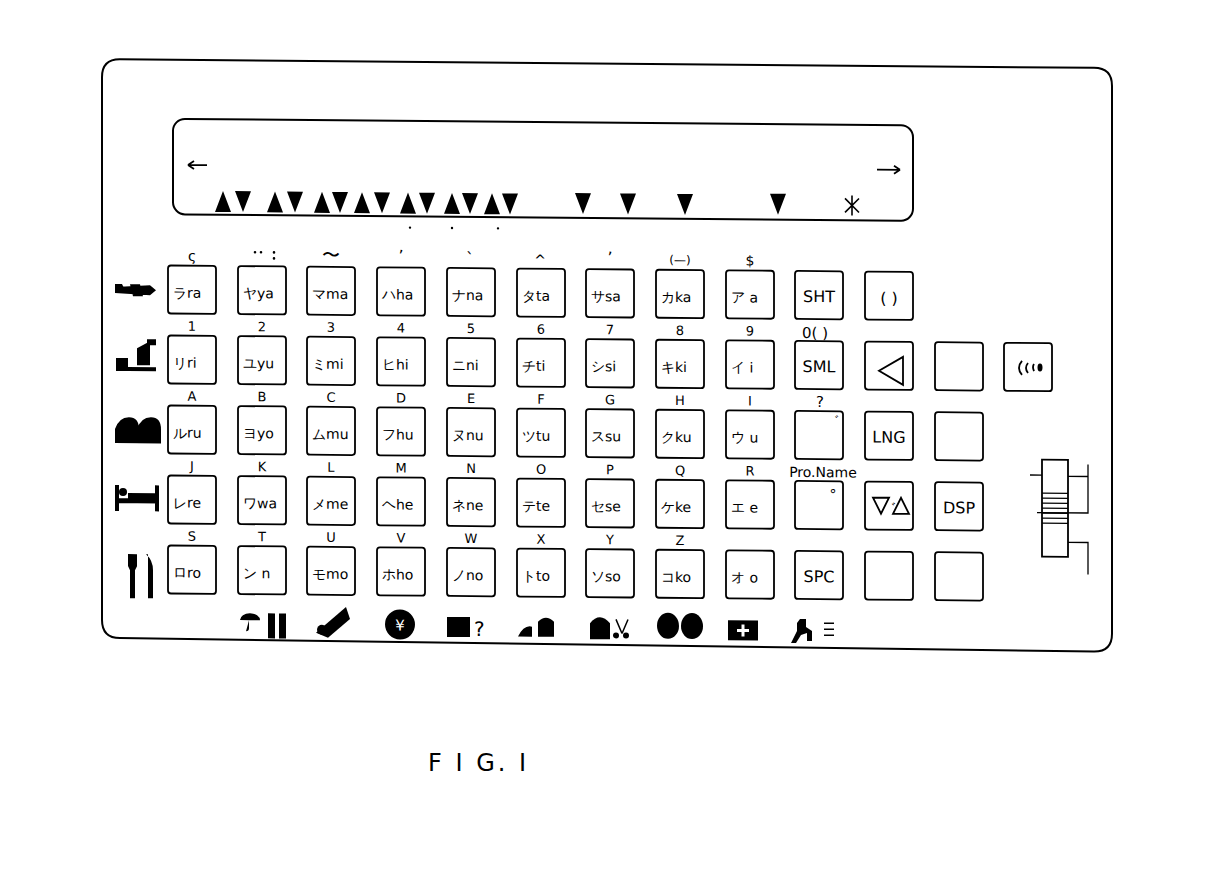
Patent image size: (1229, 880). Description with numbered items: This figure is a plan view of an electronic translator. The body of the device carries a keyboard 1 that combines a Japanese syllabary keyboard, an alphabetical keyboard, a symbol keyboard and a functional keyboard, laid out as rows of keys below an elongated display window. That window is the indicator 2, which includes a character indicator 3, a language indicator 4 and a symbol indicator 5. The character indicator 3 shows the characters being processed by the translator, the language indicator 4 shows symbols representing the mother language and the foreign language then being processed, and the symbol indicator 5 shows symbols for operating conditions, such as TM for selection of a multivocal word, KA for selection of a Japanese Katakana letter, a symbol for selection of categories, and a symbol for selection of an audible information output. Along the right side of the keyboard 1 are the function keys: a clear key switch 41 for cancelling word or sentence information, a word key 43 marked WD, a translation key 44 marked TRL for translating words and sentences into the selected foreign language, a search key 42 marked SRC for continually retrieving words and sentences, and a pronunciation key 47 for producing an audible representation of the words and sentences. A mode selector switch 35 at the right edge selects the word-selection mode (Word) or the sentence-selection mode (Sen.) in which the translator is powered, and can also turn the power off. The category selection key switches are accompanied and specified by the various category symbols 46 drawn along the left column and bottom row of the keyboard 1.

The keyboard 1 is at (318, 247).
The indicator 2 is at (497, 118).
The character indicator 3 is at (787, 128).
The language indicator 4 is at (333, 182).
The symbol indicator 5 is at (688, 184).
The mode selector switch 35 is at (1090, 510).
The clear key switch 41 is at (960, 332).
The search key 42 is at (950, 593).
The word key 43 is at (962, 454).
The translation key 44 is at (885, 593).
The category symbols 46 is at (112, 579).
The pronunciation key 47 is at (1053, 369).